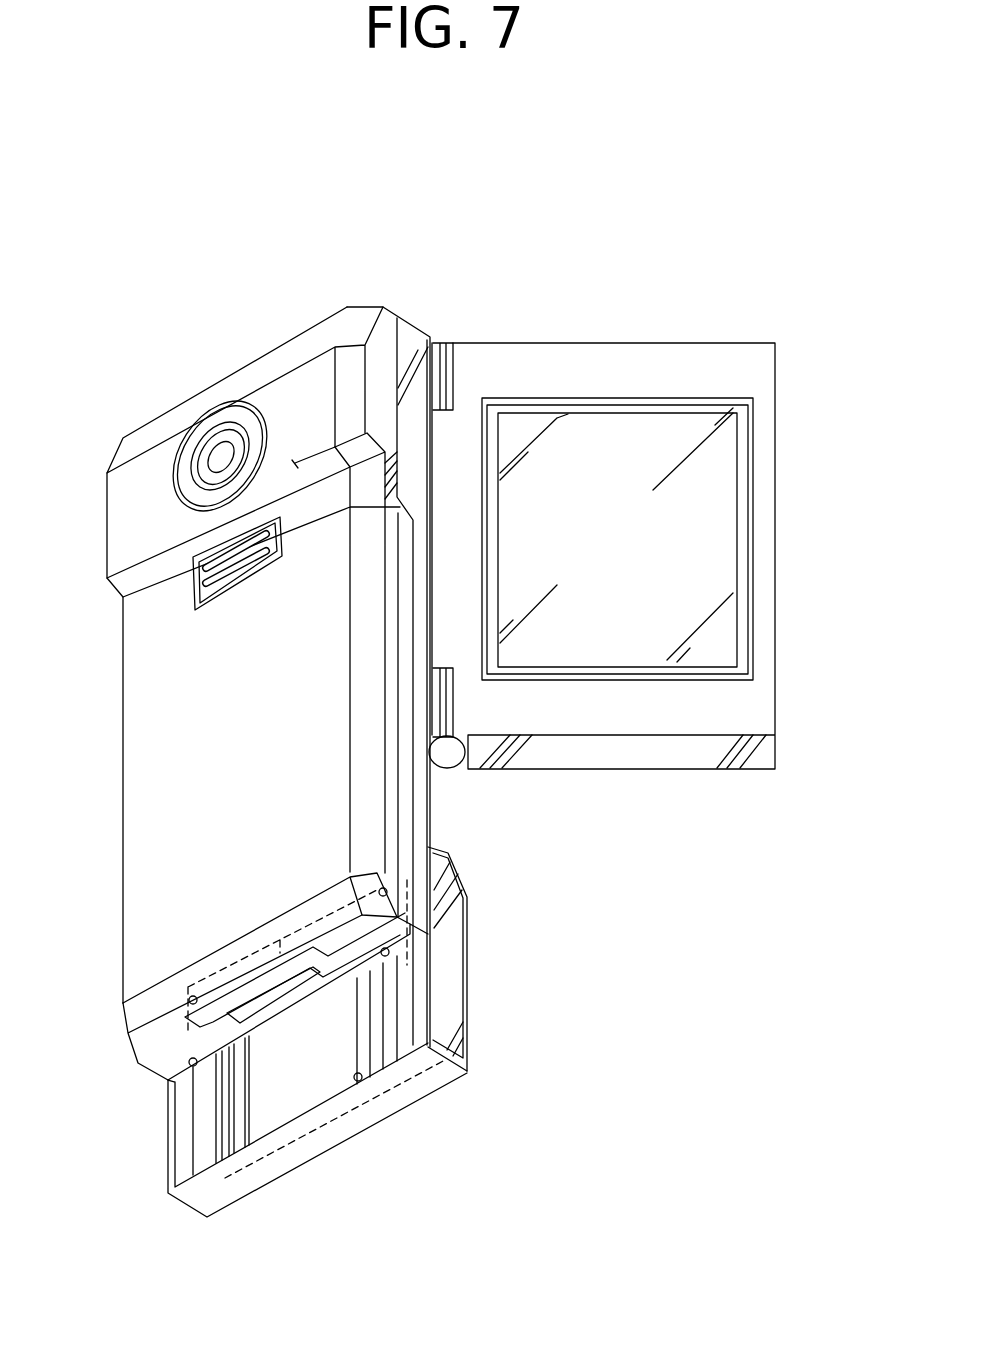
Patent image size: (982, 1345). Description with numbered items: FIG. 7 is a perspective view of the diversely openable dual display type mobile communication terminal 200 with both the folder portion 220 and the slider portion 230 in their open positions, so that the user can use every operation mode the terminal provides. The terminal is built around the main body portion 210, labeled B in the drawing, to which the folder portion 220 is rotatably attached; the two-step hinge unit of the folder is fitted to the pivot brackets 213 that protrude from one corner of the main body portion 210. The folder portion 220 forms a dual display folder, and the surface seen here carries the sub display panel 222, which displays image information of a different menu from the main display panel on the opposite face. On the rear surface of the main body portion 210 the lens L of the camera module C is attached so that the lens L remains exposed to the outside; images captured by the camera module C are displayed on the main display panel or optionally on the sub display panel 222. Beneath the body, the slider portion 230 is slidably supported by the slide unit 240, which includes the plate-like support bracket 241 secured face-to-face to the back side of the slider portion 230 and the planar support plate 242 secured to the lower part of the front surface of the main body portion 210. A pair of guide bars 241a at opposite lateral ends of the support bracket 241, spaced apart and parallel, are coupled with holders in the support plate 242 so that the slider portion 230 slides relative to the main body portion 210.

The mobile communication terminal 200 is at (572, 849).
The main body portion 210 is at (414, 312).
The pivot brackets 213 is at (440, 343).
The folder portion 220 is at (777, 377).
The sub display panel 222 is at (706, 526).
The slider portion 230 is at (468, 1065).
The slide unit 240 is at (76, 1093).
The support bracket 241 is at (238, 1137).
The guide bars 241a is at (238, 1132).
The support plate 242 is at (190, 1095).
The body B is at (130, 749).
The camera module C is at (215, 428).
The lens L is at (226, 457).